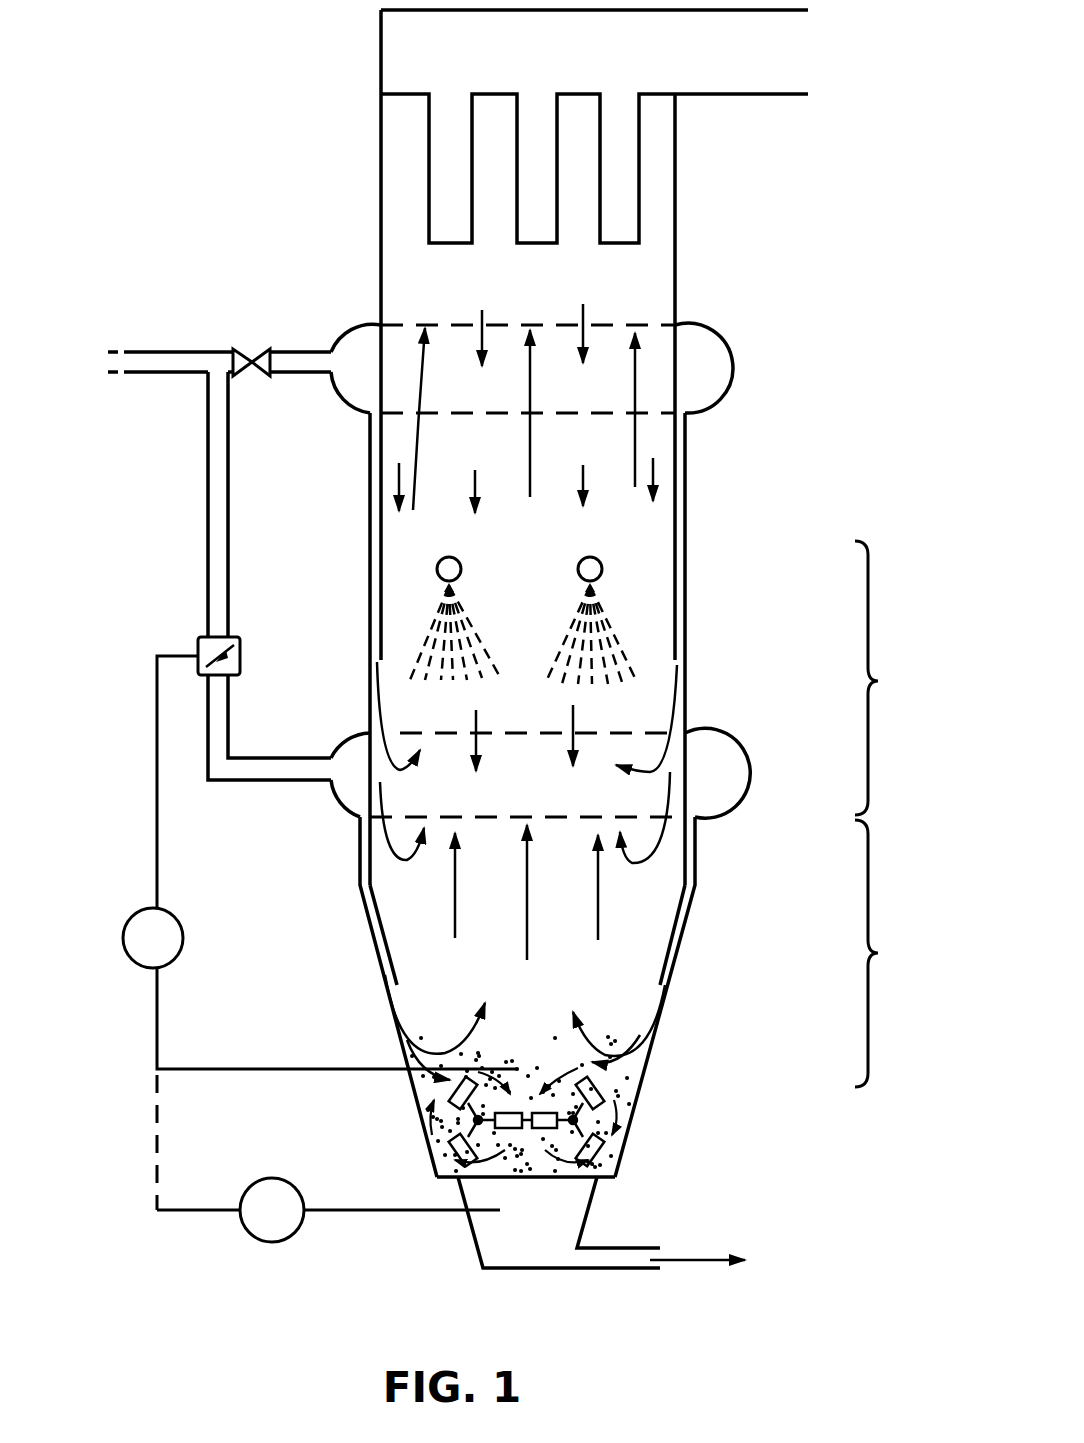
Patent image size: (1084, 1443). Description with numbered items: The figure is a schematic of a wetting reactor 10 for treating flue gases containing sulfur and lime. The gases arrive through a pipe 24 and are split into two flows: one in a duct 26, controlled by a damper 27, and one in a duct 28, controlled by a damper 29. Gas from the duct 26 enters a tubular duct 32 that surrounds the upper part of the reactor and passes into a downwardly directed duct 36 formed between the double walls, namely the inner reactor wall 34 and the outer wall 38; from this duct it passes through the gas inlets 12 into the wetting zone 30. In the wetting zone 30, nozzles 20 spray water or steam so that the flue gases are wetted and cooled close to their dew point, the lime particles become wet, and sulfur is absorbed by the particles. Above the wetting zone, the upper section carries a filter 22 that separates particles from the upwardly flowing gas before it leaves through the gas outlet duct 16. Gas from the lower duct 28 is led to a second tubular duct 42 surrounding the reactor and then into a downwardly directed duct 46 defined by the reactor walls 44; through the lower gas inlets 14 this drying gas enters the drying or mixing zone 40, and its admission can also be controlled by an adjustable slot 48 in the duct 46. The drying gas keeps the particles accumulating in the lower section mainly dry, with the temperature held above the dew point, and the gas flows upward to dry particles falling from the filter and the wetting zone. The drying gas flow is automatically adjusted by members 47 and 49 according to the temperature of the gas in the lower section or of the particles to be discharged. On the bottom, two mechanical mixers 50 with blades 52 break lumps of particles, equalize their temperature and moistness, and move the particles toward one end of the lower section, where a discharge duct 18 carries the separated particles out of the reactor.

The wetting reactor 10 is at (285, 163).
The gas inlet 12 is at (683, 640).
The gas inlet 14 is at (668, 975).
The gas outlet duct 16 is at (741, 59).
The discharge duct 18 is at (508, 1227).
The nozzles 20 is at (595, 565).
The filter 22 is at (627, 207).
The pipe 24 is at (163, 358).
The duct 26 is at (278, 352).
The damper 27 is at (257, 365).
The duct 28 is at (273, 770).
The damper 29 is at (205, 640).
The wetting zone 30 is at (894, 678).
The tubular duct 32 is at (362, 345).
The reactor wall 34 is at (382, 575).
The downwardly directed duct 36 is at (376, 536).
The reactor wall 38 is at (370, 605).
The drying or mixing zone 40 is at (898, 953).
The tubular duct 42 is at (347, 743).
The reactor wall 44 is at (380, 918).
The downwardly directed duct 46 is at (378, 930).
The adjusting member 47 is at (181, 938).
The adjustable slot 48 is at (678, 950).
The adjusting member 49 is at (290, 1193).
The mechanical mixer 50 is at (590, 1118).
The blades 52 is at (600, 1150).